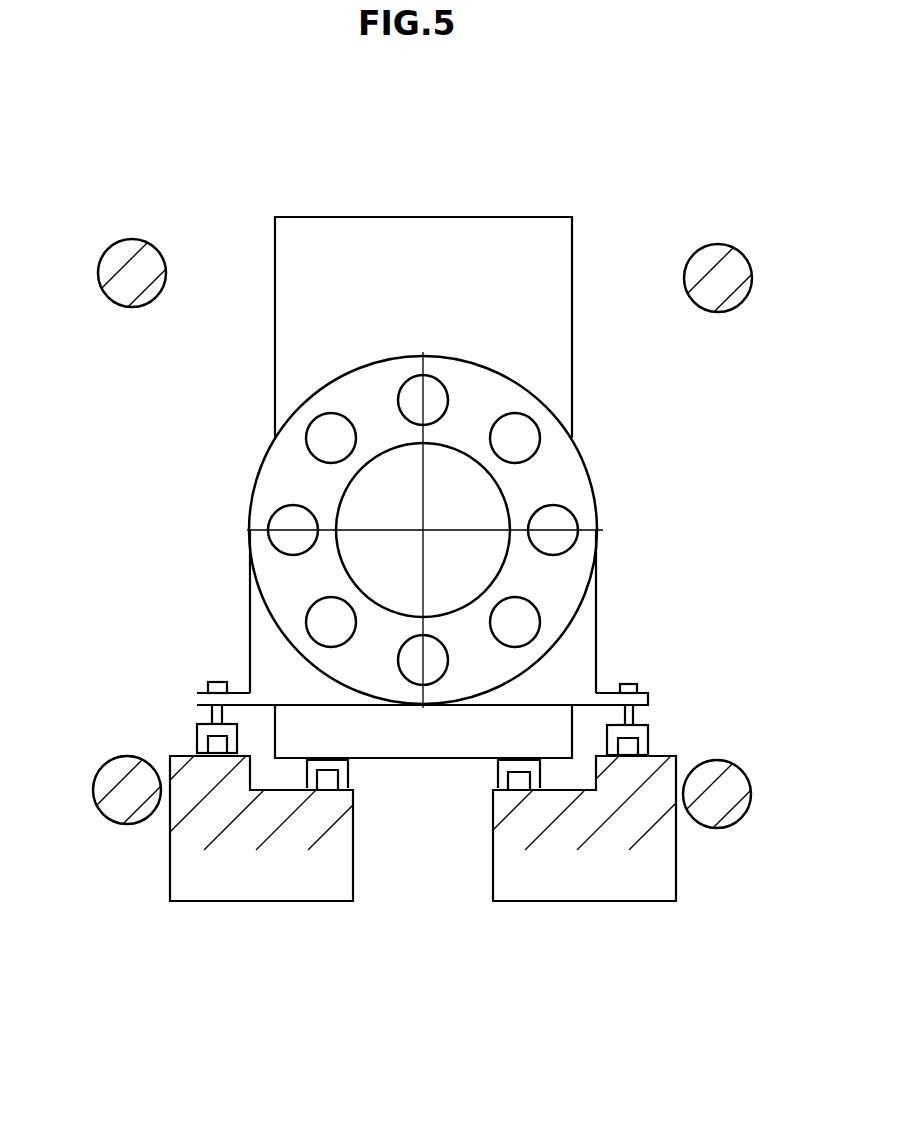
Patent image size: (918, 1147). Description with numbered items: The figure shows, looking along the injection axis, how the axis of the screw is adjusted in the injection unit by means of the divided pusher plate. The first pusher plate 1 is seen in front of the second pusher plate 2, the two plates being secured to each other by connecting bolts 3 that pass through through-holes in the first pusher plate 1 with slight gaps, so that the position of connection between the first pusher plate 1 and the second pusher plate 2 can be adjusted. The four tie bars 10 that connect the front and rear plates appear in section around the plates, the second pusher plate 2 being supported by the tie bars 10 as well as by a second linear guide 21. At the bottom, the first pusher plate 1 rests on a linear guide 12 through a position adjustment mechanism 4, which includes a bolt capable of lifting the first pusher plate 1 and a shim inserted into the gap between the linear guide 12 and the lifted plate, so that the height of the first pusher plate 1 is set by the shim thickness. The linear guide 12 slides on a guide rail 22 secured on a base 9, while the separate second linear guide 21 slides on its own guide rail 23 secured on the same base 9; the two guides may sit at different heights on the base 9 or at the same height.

The first pusher plate 1 is at (268, 458).
The second pusher plate 2 is at (575, 280).
The connecting bolt 3 is at (543, 442).
The position adjustment mechanism 4 is at (630, 687).
The base 9 is at (677, 870).
The tie bar 10 is at (730, 313).
The linear guide 12 is at (650, 723).
The second linear guide 21 is at (348, 767).
The guide rail 22 is at (632, 750).
The guide rail 23 is at (325, 782).